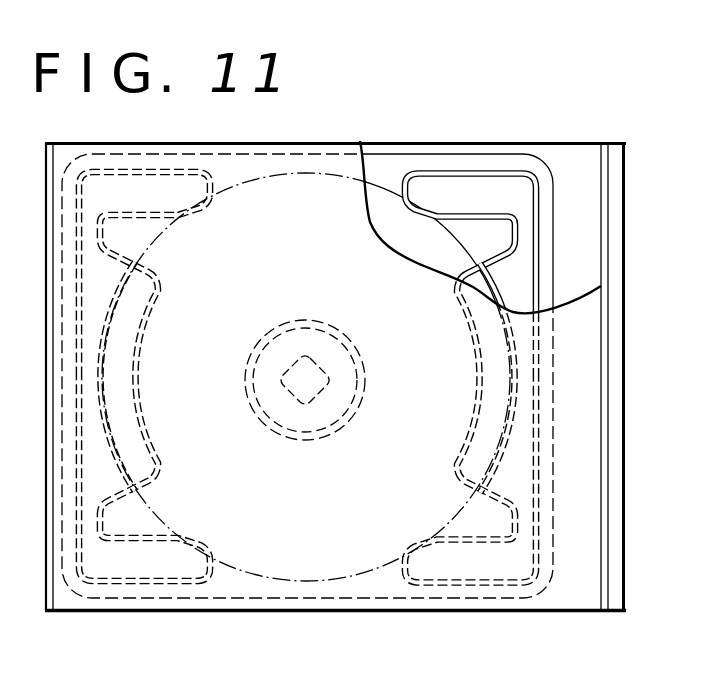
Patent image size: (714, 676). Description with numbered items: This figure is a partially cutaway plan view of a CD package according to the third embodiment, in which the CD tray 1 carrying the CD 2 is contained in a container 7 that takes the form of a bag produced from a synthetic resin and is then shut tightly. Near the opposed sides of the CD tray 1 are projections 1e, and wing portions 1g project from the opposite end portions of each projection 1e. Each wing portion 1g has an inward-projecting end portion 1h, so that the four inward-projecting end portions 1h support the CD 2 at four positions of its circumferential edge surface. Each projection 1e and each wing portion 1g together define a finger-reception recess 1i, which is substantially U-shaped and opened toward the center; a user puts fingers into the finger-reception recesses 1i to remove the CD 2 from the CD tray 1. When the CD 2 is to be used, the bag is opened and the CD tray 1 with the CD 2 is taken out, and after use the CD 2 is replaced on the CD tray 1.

The CD tray 1 is at (453, 166).
The projection 1e is at (527, 213).
The wing portion 1g is at (457, 203).
The inward-projecting end portion 1h is at (410, 207).
The finger-reception recess 1i is at (484, 224).
The CD 2 is at (510, 233).
The container 7 is at (592, 333).